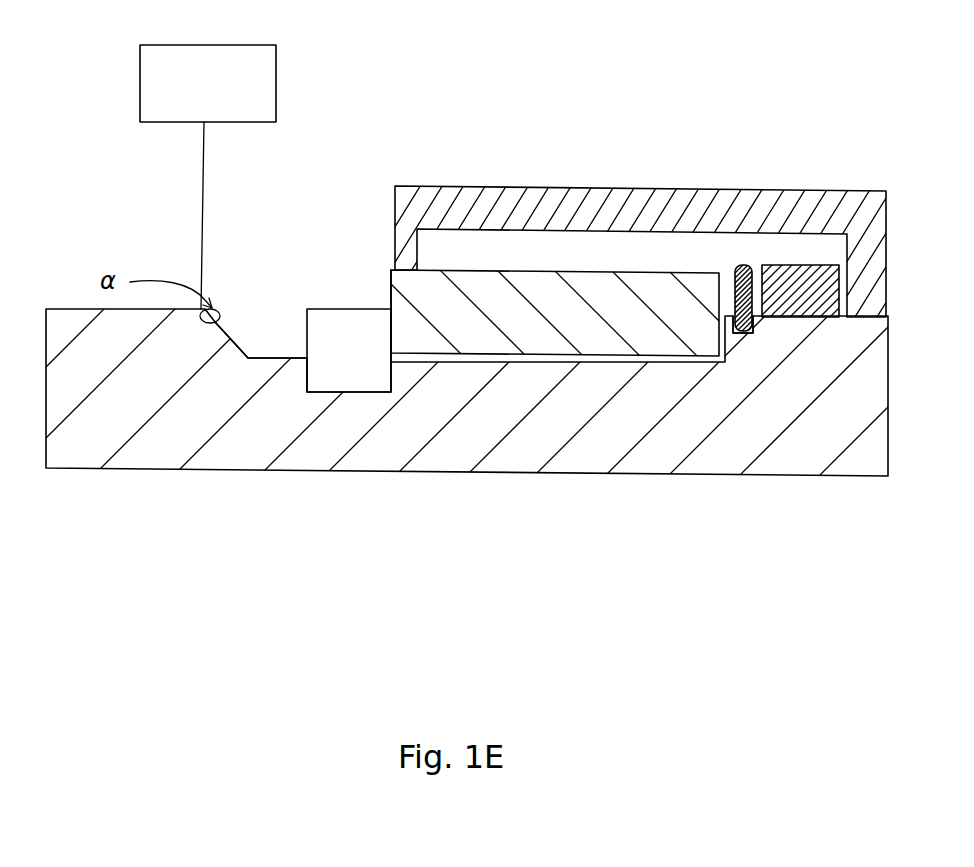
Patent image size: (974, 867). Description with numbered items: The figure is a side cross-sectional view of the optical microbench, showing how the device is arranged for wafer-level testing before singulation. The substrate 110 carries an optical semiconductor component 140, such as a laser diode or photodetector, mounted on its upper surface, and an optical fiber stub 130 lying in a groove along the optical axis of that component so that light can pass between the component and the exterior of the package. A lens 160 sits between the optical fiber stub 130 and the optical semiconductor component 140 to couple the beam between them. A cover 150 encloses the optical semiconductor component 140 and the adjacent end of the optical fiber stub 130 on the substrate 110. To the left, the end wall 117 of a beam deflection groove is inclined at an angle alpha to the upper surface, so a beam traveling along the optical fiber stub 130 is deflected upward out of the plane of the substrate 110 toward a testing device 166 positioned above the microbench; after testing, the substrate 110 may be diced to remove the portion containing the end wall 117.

The substrate 110 is at (777, 475).
The end wall 117 is at (217, 323).
The optical fiber stub 130 is at (592, 285).
The optical semiconductor component 140 is at (827, 310).
The cap/lid 150 is at (713, 188).
The lens 160 is at (745, 265).
The laser source 166 is at (230, 100).